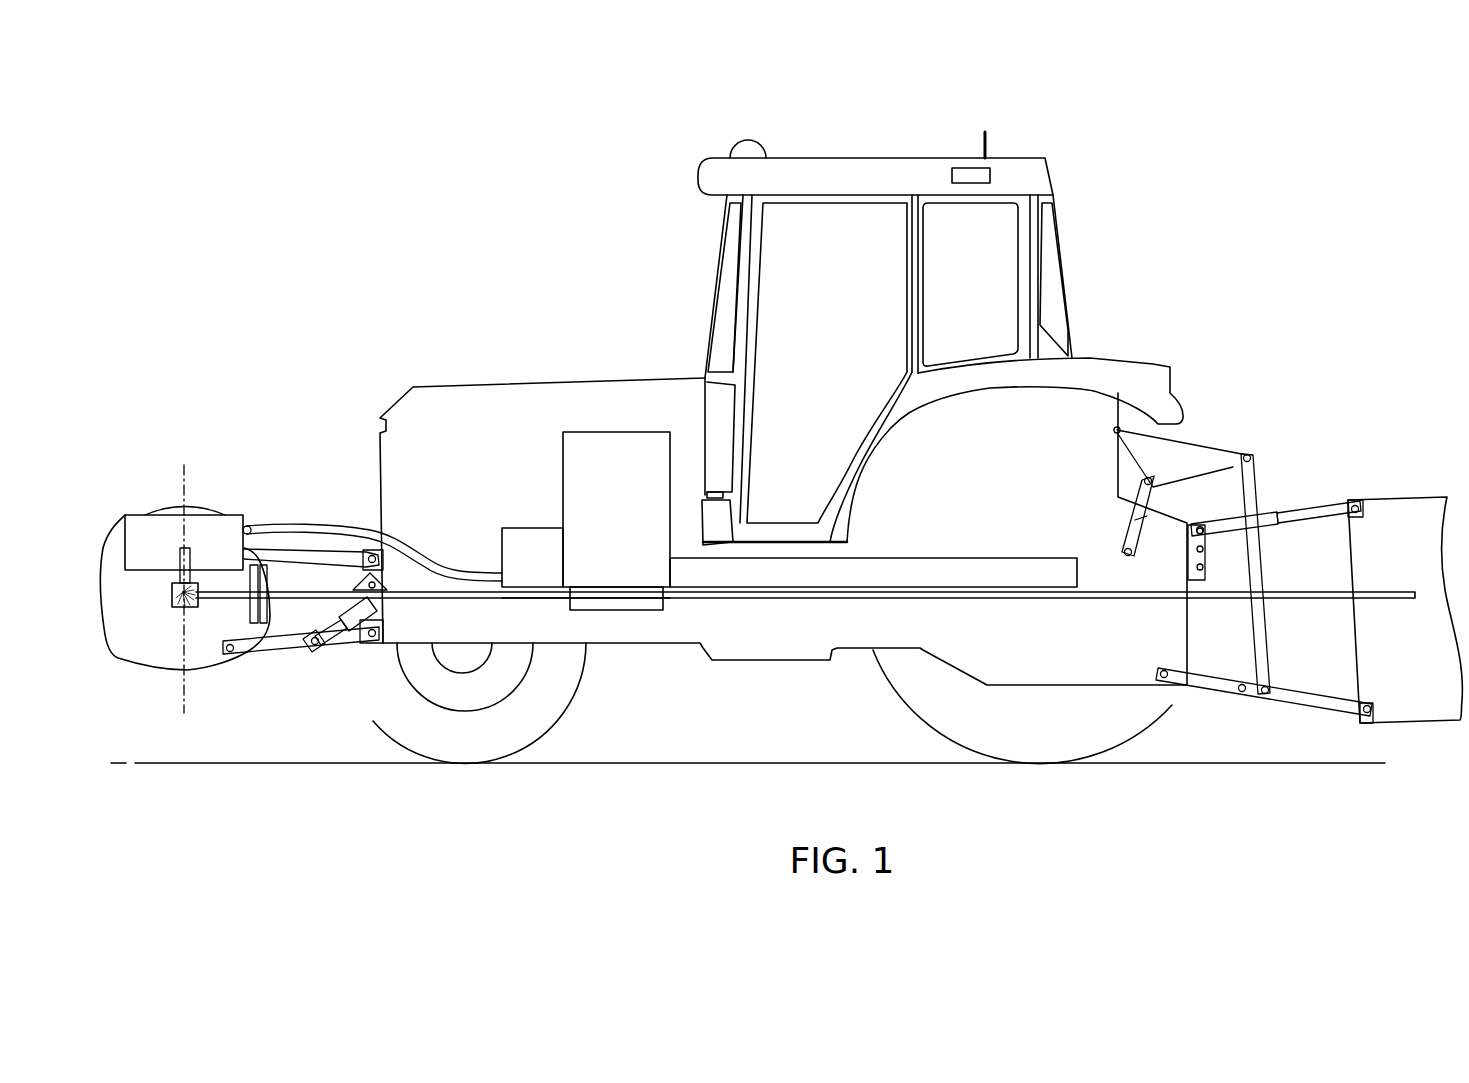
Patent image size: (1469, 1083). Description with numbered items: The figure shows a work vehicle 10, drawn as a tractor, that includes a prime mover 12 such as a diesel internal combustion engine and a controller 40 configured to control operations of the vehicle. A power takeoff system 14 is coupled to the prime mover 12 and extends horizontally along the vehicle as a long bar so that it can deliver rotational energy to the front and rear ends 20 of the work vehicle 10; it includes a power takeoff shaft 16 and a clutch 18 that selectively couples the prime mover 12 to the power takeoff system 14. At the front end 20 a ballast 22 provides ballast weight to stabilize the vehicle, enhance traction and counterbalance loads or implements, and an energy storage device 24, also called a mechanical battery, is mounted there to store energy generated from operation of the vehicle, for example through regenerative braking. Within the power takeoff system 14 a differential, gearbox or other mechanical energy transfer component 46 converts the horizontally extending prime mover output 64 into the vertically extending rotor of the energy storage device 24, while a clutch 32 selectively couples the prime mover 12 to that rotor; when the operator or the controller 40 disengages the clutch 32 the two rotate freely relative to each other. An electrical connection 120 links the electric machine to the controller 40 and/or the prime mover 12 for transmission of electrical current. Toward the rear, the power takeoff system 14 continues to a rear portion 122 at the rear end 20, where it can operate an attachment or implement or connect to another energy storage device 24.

The work vehicle 10 is at (297, 841).
The prime mover 12 is at (603, 518).
The power takeoff system 14 is at (311, 616).
The power takeoff shaft 16 is at (320, 593).
The clutch 18 is at (607, 610).
The end 20 is at (251, 363).
The ballast 22 is at (119, 486).
The energy storage device 24 is at (226, 530).
The clutch 32 is at (258, 625).
The controller 40 is at (547, 568).
The mechanical energy transfer component 46 is at (173, 598).
The prime mover output 64 is at (538, 598).
The electrical connection 120 is at (410, 558).
The rear portion 122 is at (1321, 638).